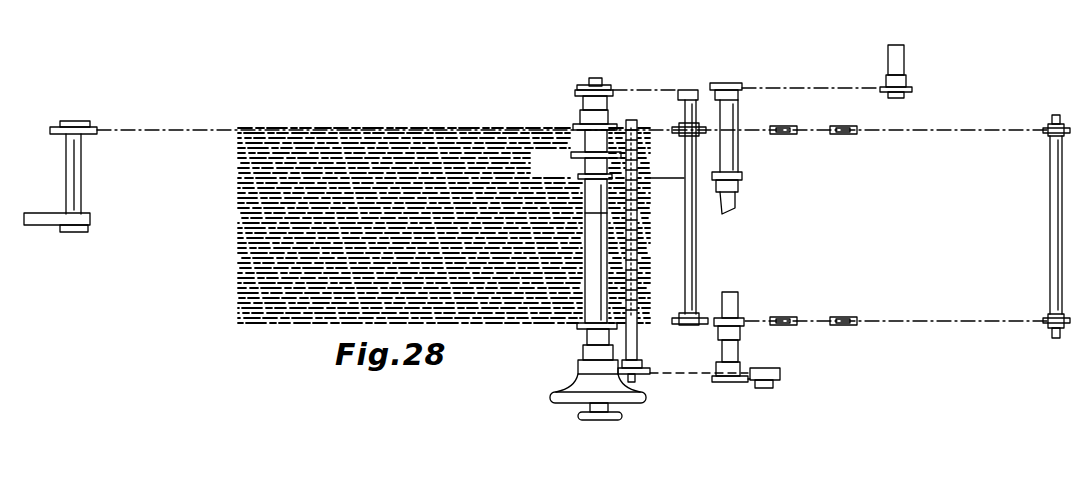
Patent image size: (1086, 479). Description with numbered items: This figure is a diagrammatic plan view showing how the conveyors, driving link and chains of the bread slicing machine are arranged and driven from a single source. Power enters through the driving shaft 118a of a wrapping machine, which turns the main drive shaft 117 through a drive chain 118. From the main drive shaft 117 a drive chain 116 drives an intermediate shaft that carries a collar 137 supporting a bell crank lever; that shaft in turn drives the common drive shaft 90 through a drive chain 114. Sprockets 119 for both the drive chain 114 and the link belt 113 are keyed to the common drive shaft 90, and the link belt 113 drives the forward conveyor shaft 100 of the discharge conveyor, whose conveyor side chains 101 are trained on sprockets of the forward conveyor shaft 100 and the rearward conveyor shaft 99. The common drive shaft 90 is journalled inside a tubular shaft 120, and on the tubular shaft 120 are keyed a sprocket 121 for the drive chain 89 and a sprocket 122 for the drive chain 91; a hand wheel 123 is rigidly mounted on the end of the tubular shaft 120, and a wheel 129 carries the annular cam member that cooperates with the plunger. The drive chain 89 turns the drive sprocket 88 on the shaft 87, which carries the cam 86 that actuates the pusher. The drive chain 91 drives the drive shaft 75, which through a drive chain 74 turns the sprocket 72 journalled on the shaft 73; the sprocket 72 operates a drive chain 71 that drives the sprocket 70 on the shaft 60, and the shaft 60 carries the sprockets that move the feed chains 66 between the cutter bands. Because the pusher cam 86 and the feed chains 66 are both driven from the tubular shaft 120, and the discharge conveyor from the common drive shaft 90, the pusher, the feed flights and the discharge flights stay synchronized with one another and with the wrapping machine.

The shaft 60 is at (637, 350).
The feed chain 66 is at (318, 314).
The sprocket 70 is at (643, 366).
The drive chain 71 is at (676, 376).
The sprocket 72 is at (780, 371).
The shaft 73 is at (774, 384).
The drive chain 74 is at (746, 382).
The drive shaft 75 is at (738, 306).
The cam 86 is at (38, 226).
The shaft 87 is at (83, 195).
The drive sprocket 88 is at (57, 125).
The drive chain 89 is at (113, 130).
The common drive shaft 90 is at (595, 78).
The drive chain 91 is at (680, 319).
The rearward conveyor shaft 99 is at (1050, 256).
The forward conveyor shaft 100 is at (697, 266).
The conveyor side chain 101 is at (892, 134).
The link belt 113 is at (664, 92).
The drive chain 114 is at (578, 86).
The drive chain 116 is at (668, 178).
The main drive shaft 117 is at (742, 157).
The drive chain 118 is at (797, 88).
The driving shaft of wrapping machine 118a is at (904, 62).
The sprocket 119 is at (614, 91).
The tubular shaft 120 is at (585, 352).
The sprocket 121 is at (578, 122).
The sprocket 122 is at (578, 326).
The hand wheel 123 is at (558, 401).
The wheel 129 is at (600, 421).
The collar 137 is at (576, 154).